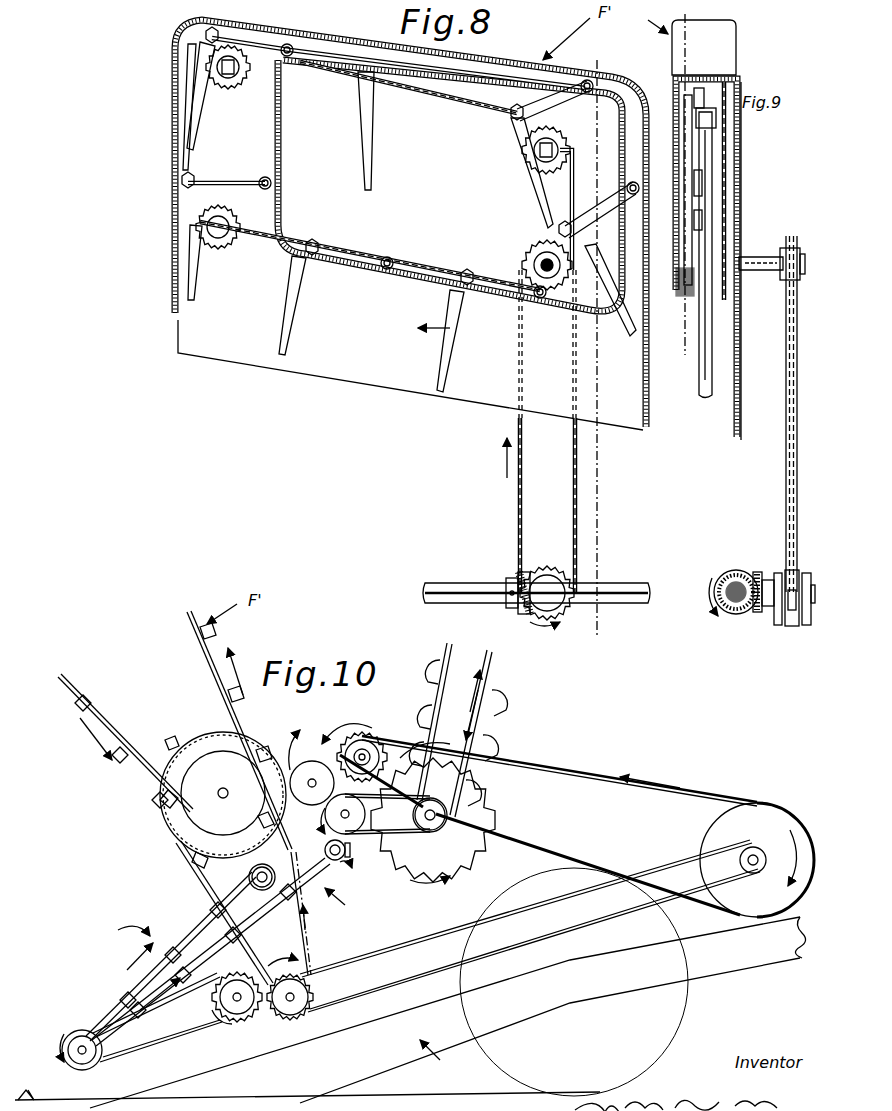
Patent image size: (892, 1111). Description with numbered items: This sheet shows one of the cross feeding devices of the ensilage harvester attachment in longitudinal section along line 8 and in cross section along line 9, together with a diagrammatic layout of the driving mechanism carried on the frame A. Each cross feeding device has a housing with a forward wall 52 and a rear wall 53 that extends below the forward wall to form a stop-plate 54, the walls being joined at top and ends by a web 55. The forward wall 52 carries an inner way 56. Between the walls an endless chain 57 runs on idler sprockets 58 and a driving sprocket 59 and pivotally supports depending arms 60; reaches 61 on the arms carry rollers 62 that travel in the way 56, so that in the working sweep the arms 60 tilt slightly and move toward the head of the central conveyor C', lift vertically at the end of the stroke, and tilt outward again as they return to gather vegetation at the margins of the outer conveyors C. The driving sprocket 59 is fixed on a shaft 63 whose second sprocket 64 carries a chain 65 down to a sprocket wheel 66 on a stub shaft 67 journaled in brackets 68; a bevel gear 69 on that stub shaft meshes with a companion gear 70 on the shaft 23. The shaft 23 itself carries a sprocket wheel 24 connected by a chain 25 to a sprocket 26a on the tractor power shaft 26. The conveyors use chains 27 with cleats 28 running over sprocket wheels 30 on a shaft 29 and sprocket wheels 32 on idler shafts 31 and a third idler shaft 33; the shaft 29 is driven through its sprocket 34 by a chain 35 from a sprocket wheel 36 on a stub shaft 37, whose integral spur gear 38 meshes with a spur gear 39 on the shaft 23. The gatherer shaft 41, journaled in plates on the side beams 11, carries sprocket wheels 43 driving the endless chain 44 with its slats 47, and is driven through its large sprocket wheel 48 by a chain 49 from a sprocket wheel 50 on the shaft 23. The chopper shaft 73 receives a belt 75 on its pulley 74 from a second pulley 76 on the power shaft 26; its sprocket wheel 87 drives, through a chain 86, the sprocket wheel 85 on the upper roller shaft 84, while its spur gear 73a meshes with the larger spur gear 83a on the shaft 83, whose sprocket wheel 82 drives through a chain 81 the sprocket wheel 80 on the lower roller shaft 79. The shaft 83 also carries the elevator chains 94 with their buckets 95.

In FIG. 9, the section line 8— 8 is at (684, 186).
In FIG. 8, the section line 9— 9 is at (596, 345).
In FIG. 10, the side beams 11 is at (378, 1032).
In FIG. 8, the second shaft 23 is at (450, 588).
In FIG. 9, the second shaft 23 is at (735, 600).
In FIG. 10, the second shaft 23 is at (290, 1002).
In FIG. 10, the sprocket wheel 24 is at (303, 975).
In FIG. 10, the chain 25 is at (400, 946).
In FIG. 10, the power shaft 26 is at (756, 850).
In FIG. 10, the sprocket 26a is at (746, 863).
In FIG. 10, the chains 27 is at (180, 930).
In FIG. 10, the transverse slats or cleats 28 is at (126, 986).
In FIG. 10, the shaft 29 is at (80, 1062).
In FIG. 10, the sprocket wheels 30 is at (100, 1060).
In FIG. 10, the idler shafts 31 is at (268, 866).
In FIG. 10, the sprocket wheels 32 is at (251, 876).
In FIG. 10, the third idler shaft 33 is at (342, 870).
In FIG. 10, the driving sprocket 34 is at (76, 1034).
In FIG. 10, the chain 35 is at (155, 1048).
In FIG. 10, the sprocket wheel 36 is at (232, 1016).
In FIG. 10, the stub shaft 37 is at (237, 990).
In FIG. 10, the spur gear 38 is at (250, 1026).
In FIG. 10, the spur gear 39 is at (304, 1014).
In FIG. 10, the shaft 41 is at (224, 790).
In FIG. 10, the fixed spaced sprocket wheels 43 is at (190, 812).
In FIG. 10, the endless chain 44 is at (108, 726).
In FIG. 10, the transverse slats 47 is at (258, 744).
In FIG. 10, the large sprocket wheel 48 is at (178, 855).
In FIG. 10, the chain 49 is at (315, 905).
In FIG. 10, the sprocket wheel 50 is at (306, 1000).
In FIG. 9, the forward wall 52 is at (678, 236).
In FIG. 8, the rear wall 53 is at (450, 185).
In FIG. 9, the rear wall 53 is at (742, 172).
In FIG. 8, the stop-plate 54 is at (382, 380).
In FIG. 9, the stop-plate 54 is at (736, 418).
In FIG. 8, the web 55 is at (300, 40).
In FIG. 9, the web 55 is at (722, 47).
In FIG. 8, the inner way 56 is at (472, 80).
In FIG. 9, the inner way 56 is at (676, 296).
In FIG. 8, the endless chain 57 is at (484, 110).
In FIG. 9, the endless chain 57 is at (730, 146).
In FIG. 8, the idler sprockets 58 is at (230, 86).
In FIG. 8, the driving sprocket 59 is at (542, 260).
In FIG. 8, the depending arms 60 is at (192, 292).
In FIG. 9, the depending arms 60 is at (714, 206).
In FIG. 8, the reaches 61 is at (400, 66).
In FIG. 9, the reaches 61 is at (692, 112).
In FIG. 8, the rollers 62 is at (268, 182).
In FIG. 8, the shaft 63 is at (542, 263).
In FIG. 9, the shaft 63 is at (764, 272).
In FIG. 9, the second sprocket 64 is at (792, 244).
In FIG. 8, the chain 65 is at (572, 478).
In FIG. 9, the chain 65 is at (786, 498).
In FIG. 8, the sprocket wheel 66 is at (560, 572).
In FIG. 9, the sprocket wheel 66 is at (791, 628).
In FIG. 9, the stub shaft 67 is at (810, 574).
In FIG. 9, the brackets 68 is at (776, 633).
In FIG. 8, the bevel gear 69 is at (548, 566).
In FIG. 9, the bevel gear 69 is at (758, 572).
In FIG. 8, the companion gear 70 is at (512, 608).
In FIG. 9, the companion gear 70 is at (734, 574).
In FIG. 10, the chopper shaft 73 is at (345, 726).
In FIG. 10, the spur gear 73a is at (430, 743).
In FIG. 10, the pulley 74 is at (372, 738).
In FIG. 10, the belt 75 is at (664, 780).
In FIG. 10, the second pulley 76 is at (752, 812).
In FIG. 10, the shaft 79 is at (387, 814).
In FIG. 10, the sprocket wheel 80 is at (310, 821).
In FIG. 10, the chain 81 is at (394, 830).
In FIG. 10, the sprocket wheel 82 is at (350, 814).
In FIG. 10, the shaft 83 is at (432, 822).
In FIG. 10, the larger spur gear 83a is at (480, 812).
In FIG. 10, the shaft 84 is at (298, 772).
In FIG. 10, the sprocket wheel 85 is at (307, 774).
In FIG. 10, the chain 86 is at (314, 780).
In FIG. 10, the sprocket wheel 87 is at (376, 754).
In FIG. 10, the endless chains 94 is at (492, 672).
In FIG. 10, the buckets 95 is at (470, 745).
In FIG. 10, the frame A is at (431, 1063).
In FIG. 10, the outer conveyors C is at (130, 947).
In FIG. 10, the central conveyor C' is at (346, 900).